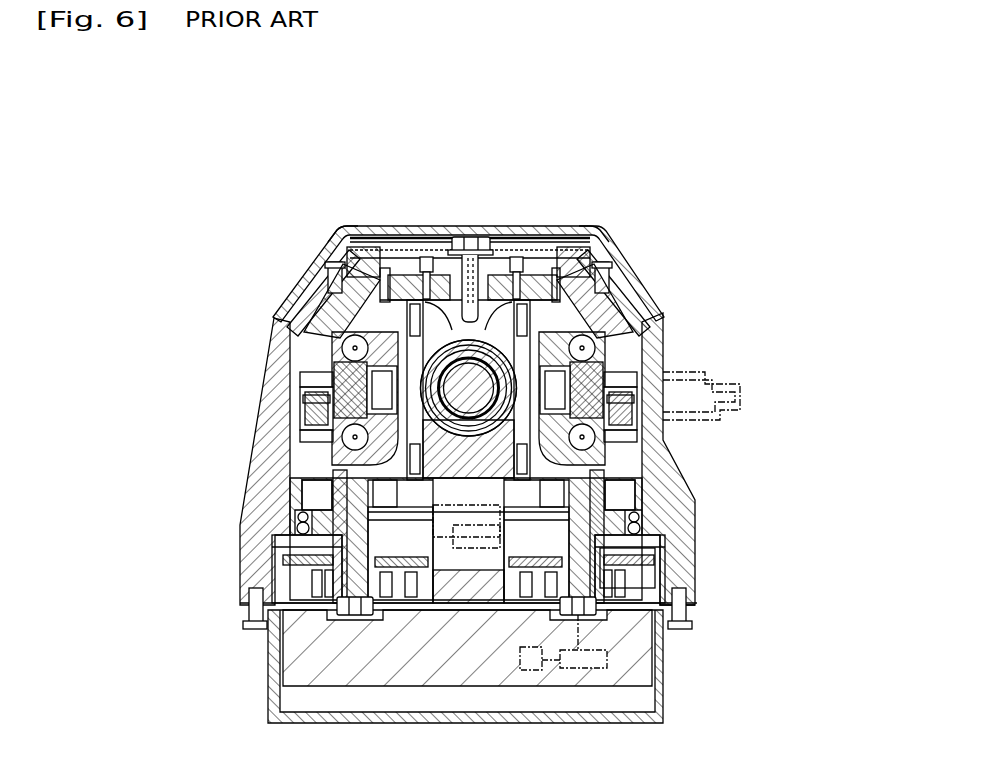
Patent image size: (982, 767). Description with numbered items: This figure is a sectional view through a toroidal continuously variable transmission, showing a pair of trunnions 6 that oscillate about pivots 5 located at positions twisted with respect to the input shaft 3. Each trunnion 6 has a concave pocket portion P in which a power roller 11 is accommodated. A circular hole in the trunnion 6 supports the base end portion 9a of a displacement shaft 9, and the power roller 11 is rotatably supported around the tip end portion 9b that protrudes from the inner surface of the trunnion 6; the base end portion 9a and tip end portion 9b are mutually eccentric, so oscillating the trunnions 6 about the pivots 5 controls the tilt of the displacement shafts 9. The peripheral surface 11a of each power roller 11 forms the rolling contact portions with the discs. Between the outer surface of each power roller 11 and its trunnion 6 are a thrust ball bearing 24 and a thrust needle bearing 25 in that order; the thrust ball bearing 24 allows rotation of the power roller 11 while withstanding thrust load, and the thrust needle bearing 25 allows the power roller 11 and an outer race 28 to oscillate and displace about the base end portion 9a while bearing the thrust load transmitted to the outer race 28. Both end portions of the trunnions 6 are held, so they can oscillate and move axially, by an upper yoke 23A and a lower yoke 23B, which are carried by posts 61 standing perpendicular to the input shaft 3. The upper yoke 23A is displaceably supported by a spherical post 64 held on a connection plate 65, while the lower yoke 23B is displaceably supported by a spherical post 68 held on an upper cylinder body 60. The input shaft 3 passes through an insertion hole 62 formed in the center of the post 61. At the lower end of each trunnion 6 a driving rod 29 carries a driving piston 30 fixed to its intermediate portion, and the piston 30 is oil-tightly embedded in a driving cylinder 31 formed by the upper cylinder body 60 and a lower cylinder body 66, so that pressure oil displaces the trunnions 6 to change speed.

The input shaft 3 is at (477, 413).
The pivot 5 is at (330, 278).
The trunnion 6 is at (290, 402).
The displacement shaft 9 is at (322, 418).
The base end portion 9a is at (307, 401).
The tip end portion 9b is at (540, 387).
The power roller 11 is at (598, 300).
The peripheral surface 11a is at (340, 238).
The upper yoke 23A is at (523, 290).
The lower yoke 23B is at (432, 578).
The thrust ball bearing 24 is at (350, 347).
The thrust needle bearing 25 is at (327, 432).
The outer race 28 is at (345, 446).
The driving rod 29 is at (285, 548).
The driving piston 30 is at (273, 626).
The driving cylinder 31 is at (310, 568).
The upper cylinder body 60 is at (657, 563).
The post 61 is at (447, 265).
The insertion hole 62 is at (430, 392).
The spherical post 64 is at (488, 248).
The connection plate 65 is at (438, 236).
The lower cylinder body 66 is at (653, 597).
The spherical post 68 is at (479, 578).
The pocket portion P is at (313, 323).